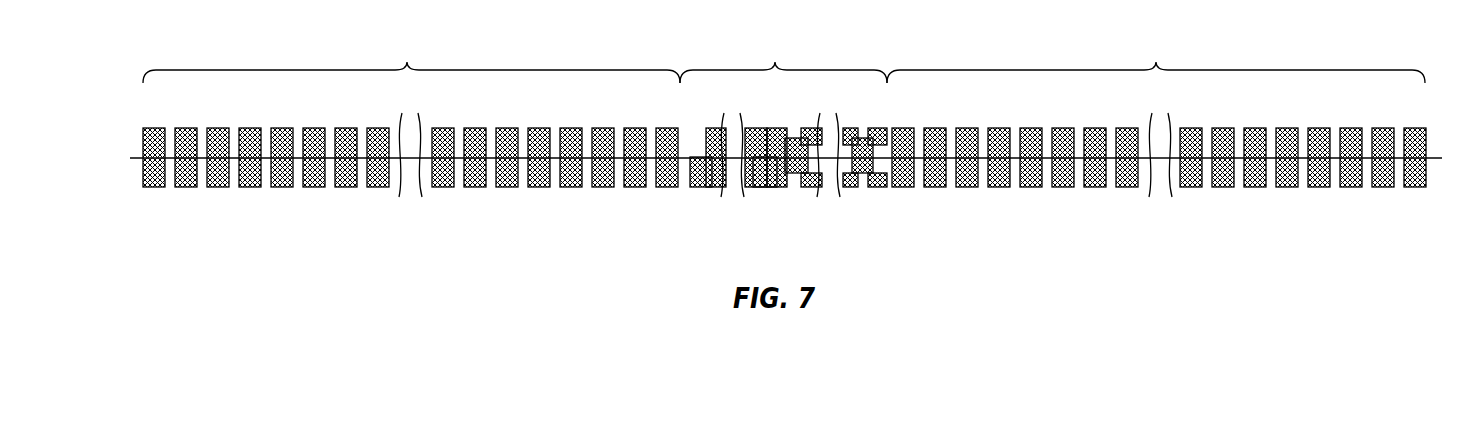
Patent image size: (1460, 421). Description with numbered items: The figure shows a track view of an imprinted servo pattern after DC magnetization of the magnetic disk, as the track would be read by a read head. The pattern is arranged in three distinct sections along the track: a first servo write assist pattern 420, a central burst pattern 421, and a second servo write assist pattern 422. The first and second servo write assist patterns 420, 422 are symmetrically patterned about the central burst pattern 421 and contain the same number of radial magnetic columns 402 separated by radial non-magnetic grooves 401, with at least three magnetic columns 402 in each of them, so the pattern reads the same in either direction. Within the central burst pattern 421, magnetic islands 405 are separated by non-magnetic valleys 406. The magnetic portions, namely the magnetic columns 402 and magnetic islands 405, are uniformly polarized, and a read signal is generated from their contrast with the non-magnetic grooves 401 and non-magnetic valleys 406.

The radial non-magnetic groove 401 is at (302, 188).
The radial magnetic column 402 is at (218, 188).
The magnetic island 405 is at (793, 174).
The non-magnetic valley 406 is at (695, 140).
The first servo write assist pattern 420 is at (411, 62).
The central burst pattern 421 is at (783, 62).
The second servo write assist pattern 422 is at (1156, 62).